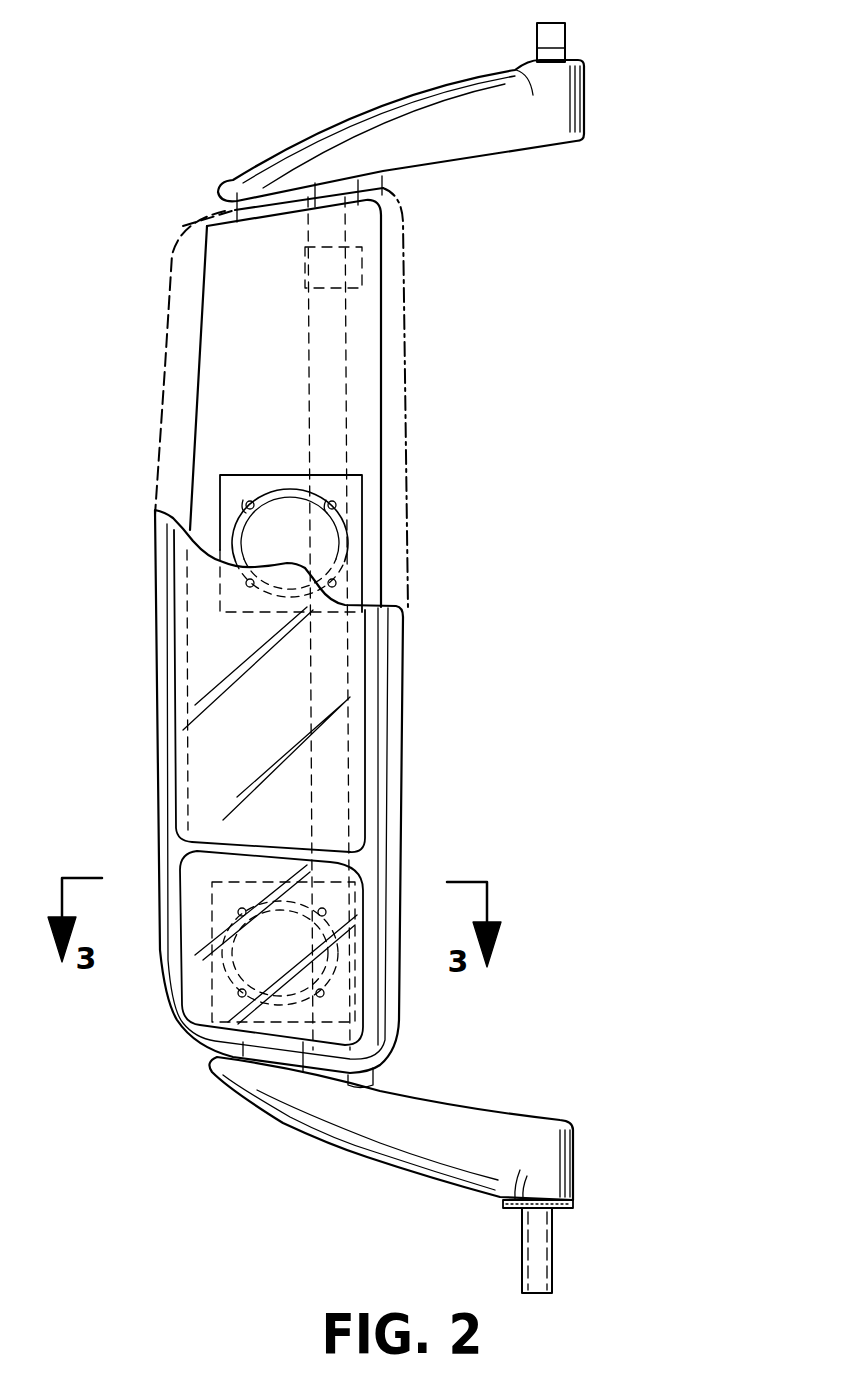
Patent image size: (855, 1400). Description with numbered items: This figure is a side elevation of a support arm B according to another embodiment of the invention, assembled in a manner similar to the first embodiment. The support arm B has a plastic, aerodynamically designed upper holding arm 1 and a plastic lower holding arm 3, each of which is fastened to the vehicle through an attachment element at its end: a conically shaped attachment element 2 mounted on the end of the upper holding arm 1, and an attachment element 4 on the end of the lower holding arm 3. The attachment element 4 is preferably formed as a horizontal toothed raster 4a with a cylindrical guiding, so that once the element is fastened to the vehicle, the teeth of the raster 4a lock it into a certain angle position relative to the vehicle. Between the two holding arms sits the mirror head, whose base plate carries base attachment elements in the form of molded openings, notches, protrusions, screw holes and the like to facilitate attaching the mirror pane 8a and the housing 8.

The upper holding arm 1 is at (470, 82).
The attachment element 2 is at (565, 53).
The lower holding arm 3 is at (300, 1123).
The attachment element 4 is at (543, 1270).
The toothed raster 4a is at (580, 1207).
The housing 8 is at (409, 352).
The mirror pane 8a is at (353, 707).
The support arm B is at (442, 517).